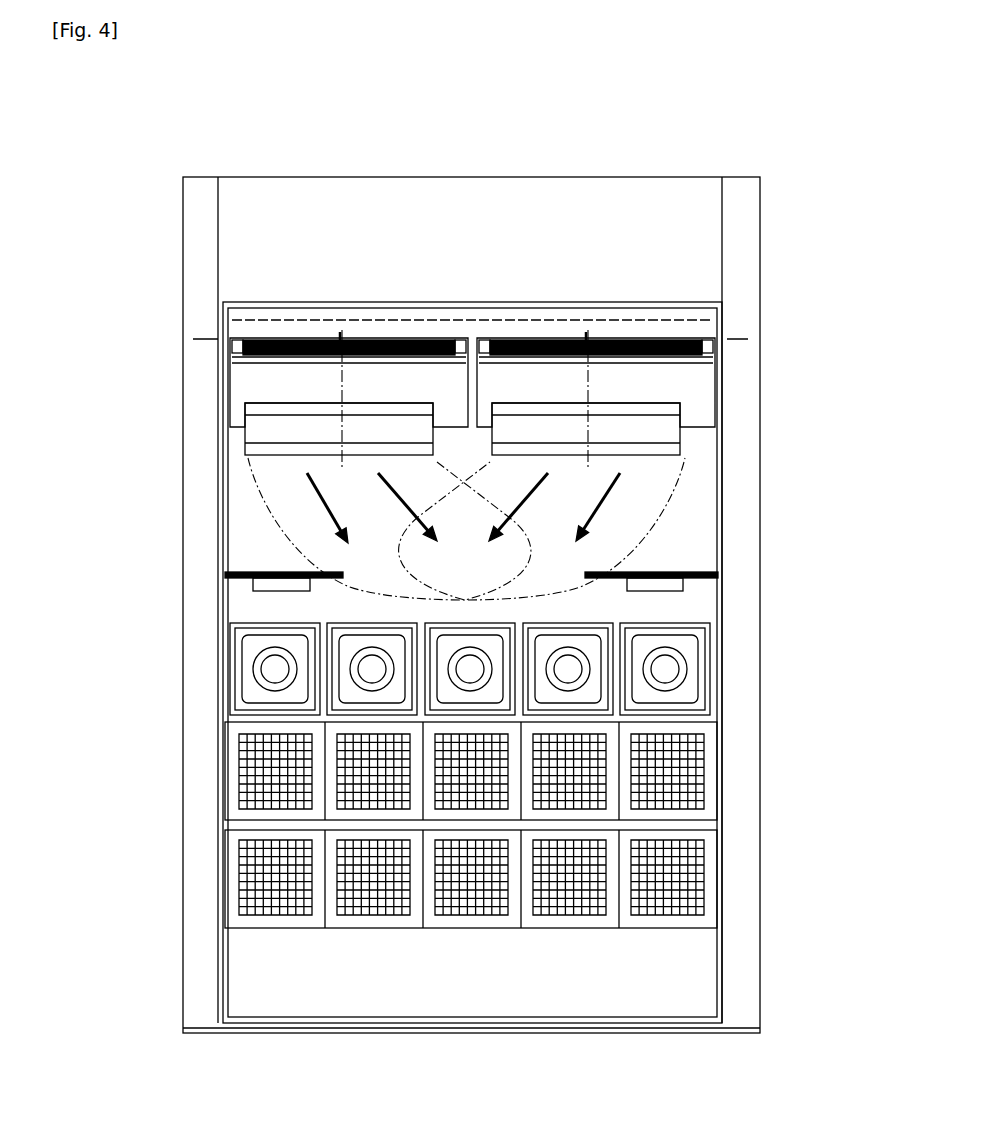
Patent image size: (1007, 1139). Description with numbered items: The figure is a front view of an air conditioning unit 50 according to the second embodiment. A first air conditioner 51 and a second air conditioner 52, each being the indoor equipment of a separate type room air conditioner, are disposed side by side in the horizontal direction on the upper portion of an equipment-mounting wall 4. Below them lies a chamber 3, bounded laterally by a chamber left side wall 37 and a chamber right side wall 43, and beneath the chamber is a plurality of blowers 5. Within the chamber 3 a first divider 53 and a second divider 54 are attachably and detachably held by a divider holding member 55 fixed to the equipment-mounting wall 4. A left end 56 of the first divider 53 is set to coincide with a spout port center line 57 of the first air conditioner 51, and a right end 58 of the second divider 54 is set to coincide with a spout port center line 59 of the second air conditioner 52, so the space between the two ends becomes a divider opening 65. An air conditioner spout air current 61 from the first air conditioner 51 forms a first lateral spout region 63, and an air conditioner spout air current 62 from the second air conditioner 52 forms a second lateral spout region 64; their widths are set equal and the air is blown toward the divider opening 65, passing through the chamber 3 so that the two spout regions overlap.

The chamber 3 is at (445, 705).
The equipment-mounting wall 4 is at (658, 324).
The blowers 5 is at (705, 895).
The chamber left side wall 37 is at (215, 998).
The chamber right side wall 43 is at (727, 993).
The air conditioning unit 50 is at (480, 250).
The first air conditioner 51 is at (693, 387).
The second air conditioner 52 is at (243, 387).
The first divider 53 is at (698, 582).
The second divider 54 is at (245, 582).
The divider holding member 55 is at (790, 697).
The left end of the first divider 56 is at (590, 577).
The spout port center line of the first air conditioner 57 is at (589, 338).
The right end of the second divider 58 is at (262, 673).
The spout port center line of the second air conditioner 59 is at (342, 338).
The air conditioner spout air current 61 is at (622, 478).
The air conditioner spout air current 62 is at (307, 478).
The first lateral spout region 63 is at (640, 530).
The second lateral spout region 64 is at (307, 522).
The divider opening 65 is at (593, 574).